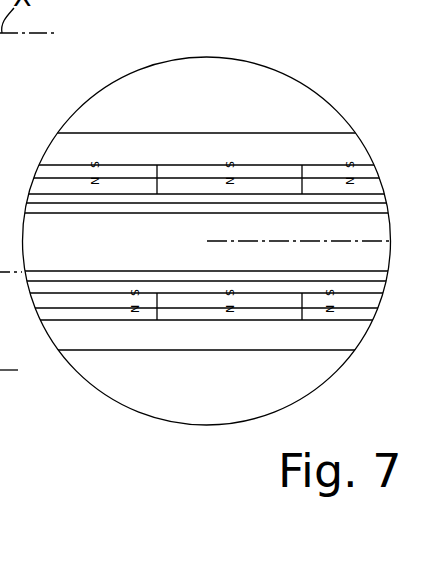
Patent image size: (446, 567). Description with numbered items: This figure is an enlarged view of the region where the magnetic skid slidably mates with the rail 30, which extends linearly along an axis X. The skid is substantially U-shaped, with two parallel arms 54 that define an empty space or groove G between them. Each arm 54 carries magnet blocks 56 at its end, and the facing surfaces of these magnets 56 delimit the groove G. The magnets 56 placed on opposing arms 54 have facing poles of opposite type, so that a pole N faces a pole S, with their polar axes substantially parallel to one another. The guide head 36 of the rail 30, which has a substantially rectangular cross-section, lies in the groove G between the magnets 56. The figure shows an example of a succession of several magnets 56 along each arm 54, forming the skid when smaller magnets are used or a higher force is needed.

The rail 30 is at (175, 132).
The arms 54 is at (205, 132).
The magnet block 56 is at (175, 191).
The guide head 36 is at (87, 252).
The groove G is at (252, 197).
The axis X is at (338, 241).